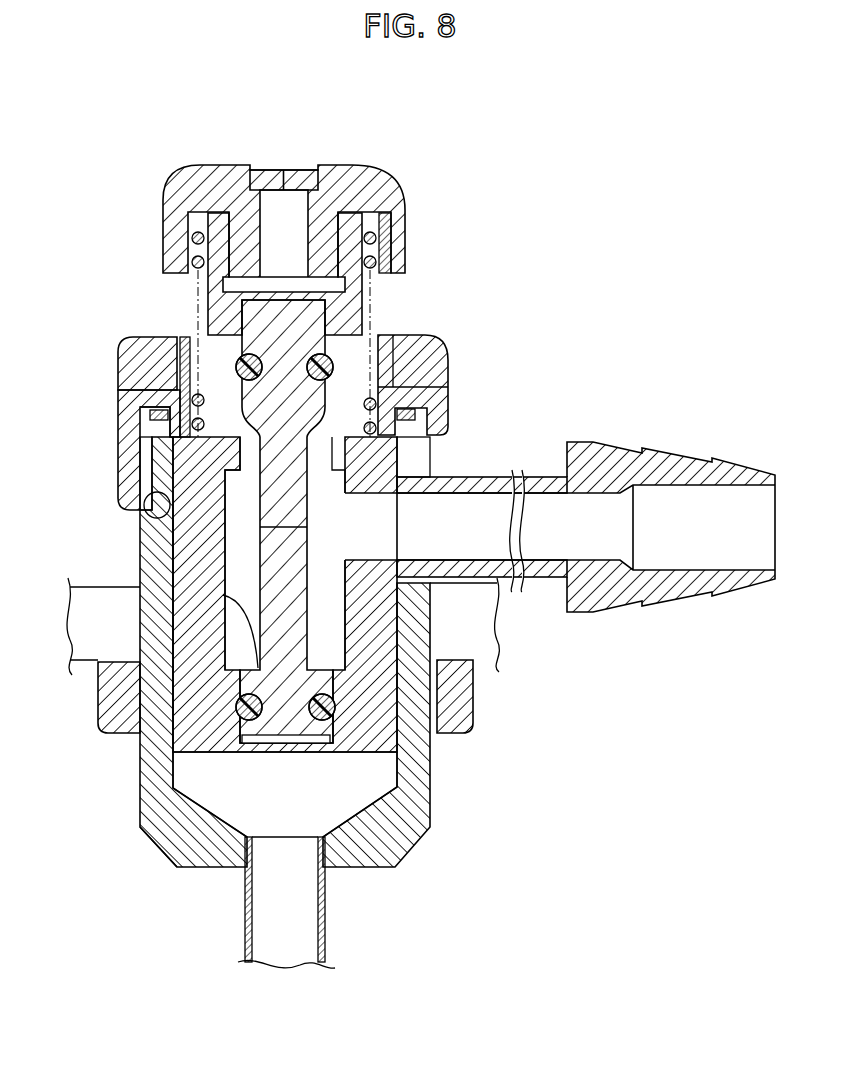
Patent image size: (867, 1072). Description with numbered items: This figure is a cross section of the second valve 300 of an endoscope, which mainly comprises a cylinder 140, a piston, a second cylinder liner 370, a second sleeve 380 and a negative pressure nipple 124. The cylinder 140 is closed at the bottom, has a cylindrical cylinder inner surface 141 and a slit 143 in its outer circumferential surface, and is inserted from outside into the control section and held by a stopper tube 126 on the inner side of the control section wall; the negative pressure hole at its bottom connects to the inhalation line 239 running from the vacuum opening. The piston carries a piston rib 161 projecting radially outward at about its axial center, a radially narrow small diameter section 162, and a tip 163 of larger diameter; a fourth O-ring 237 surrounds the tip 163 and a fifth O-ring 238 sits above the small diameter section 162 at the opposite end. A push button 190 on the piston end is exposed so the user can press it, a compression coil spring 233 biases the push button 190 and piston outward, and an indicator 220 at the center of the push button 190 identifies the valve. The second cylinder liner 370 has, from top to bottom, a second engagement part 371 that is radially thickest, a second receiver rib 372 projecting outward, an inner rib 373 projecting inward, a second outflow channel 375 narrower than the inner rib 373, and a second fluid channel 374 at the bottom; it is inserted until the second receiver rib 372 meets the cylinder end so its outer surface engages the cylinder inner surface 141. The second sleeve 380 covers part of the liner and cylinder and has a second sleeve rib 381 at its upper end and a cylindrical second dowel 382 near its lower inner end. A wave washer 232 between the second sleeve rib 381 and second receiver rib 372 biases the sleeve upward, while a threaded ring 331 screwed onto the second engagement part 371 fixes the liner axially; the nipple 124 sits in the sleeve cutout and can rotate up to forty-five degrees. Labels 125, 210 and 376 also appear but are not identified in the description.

The negative pressure nipple 124 is at (678, 593).
The flange 125 is at (94, 643).
The stopper tube 126 is at (104, 718).
The cylinder 140 is at (131, 809).
The cylinder inner surface 141 is at (178, 795).
The slit 143 is at (147, 463).
The piston rib 161 is at (331, 475).
The small diameter section 162 is at (308, 612).
The tip 163 is at (285, 794).
The push button 190 is at (381, 161).
The bonnet 210 is at (367, 308).
The indicator 220 is at (300, 167).
The wave washer 232 is at (430, 408).
The compression coil spring 233 is at (383, 261).
The fourth O-ring 237 is at (338, 722).
The fifth O-ring 238 is at (335, 357).
The inhalation line 239 is at (245, 945).
The second valve 300 is at (516, 157).
The ring 331 is at (127, 333).
The second cylinder liner 370 is at (166, 562).
The second engagement part 371 is at (185, 337).
The second receiver rib 372 is at (152, 426).
The inner rib 373 is at (228, 475).
The second fluid channel 374 is at (253, 744).
The second outflow channel 375 is at (207, 752).
The wall 376 is at (173, 633).
The second sleeve 380 is at (460, 391).
The second sleeve rib 381 is at (150, 418).
The second dowel 382 is at (152, 514).